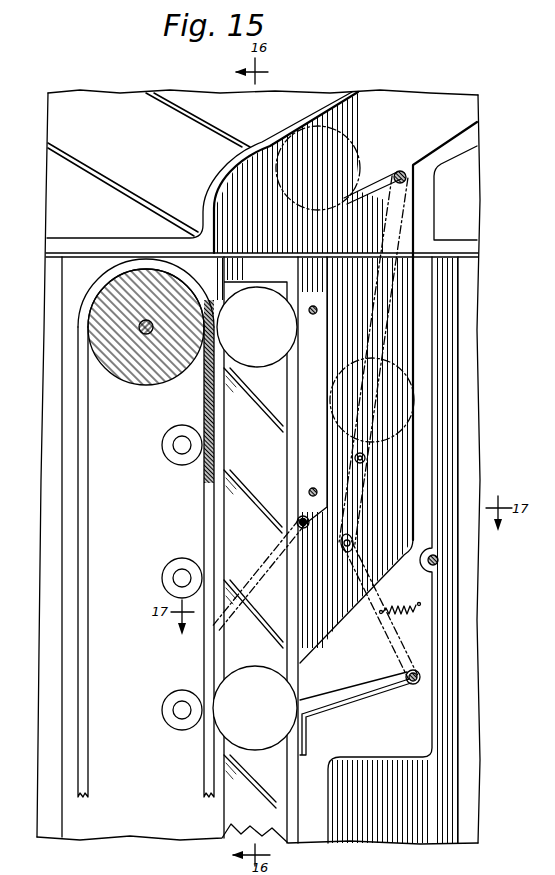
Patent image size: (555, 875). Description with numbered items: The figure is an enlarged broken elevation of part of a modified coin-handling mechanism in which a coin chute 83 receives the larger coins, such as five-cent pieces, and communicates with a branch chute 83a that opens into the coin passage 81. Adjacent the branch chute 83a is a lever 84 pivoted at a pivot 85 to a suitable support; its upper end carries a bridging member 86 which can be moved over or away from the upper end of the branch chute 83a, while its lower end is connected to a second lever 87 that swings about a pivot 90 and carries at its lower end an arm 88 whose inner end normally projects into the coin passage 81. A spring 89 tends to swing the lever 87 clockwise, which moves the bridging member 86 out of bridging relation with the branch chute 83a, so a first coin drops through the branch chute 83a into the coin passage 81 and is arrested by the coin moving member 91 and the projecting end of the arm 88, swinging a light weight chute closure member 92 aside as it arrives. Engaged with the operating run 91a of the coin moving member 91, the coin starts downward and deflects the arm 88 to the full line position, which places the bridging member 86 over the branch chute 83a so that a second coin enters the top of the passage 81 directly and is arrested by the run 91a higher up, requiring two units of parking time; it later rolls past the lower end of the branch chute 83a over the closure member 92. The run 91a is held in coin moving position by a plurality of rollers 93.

The coin passage 81 is at (252, 272).
The coin chute 83 is at (418, 102).
The branch chute 83a is at (405, 230).
The lever 84 is at (378, 323).
The pivot 85 is at (366, 460).
The bridging member 86 is at (398, 172).
The lever 87 is at (376, 595).
The arm 88 is at (362, 698).
The spring 89 is at (419, 598).
The pivot 90 is at (419, 675).
The coin moving member 91 is at (92, 752).
The run 91a is at (203, 779).
The chute closure member 92 is at (297, 578).
The rollers 93 is at (163, 449).